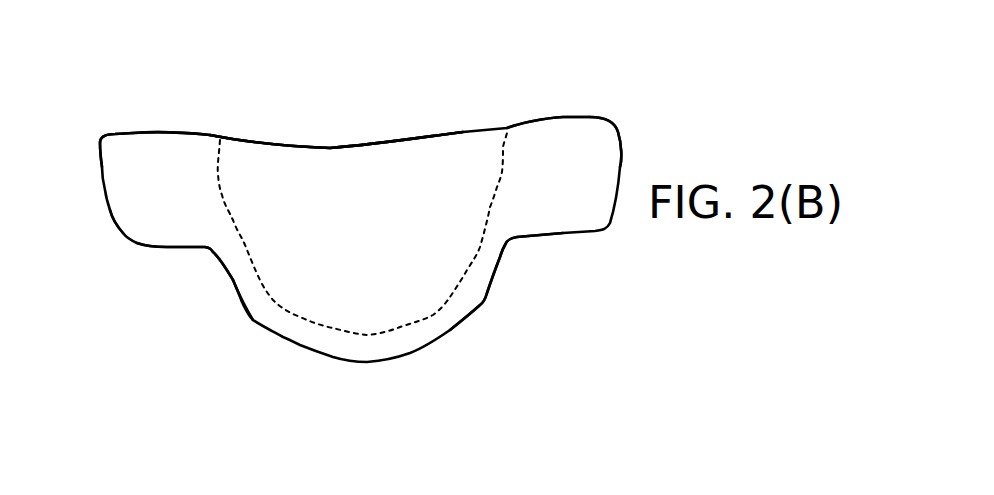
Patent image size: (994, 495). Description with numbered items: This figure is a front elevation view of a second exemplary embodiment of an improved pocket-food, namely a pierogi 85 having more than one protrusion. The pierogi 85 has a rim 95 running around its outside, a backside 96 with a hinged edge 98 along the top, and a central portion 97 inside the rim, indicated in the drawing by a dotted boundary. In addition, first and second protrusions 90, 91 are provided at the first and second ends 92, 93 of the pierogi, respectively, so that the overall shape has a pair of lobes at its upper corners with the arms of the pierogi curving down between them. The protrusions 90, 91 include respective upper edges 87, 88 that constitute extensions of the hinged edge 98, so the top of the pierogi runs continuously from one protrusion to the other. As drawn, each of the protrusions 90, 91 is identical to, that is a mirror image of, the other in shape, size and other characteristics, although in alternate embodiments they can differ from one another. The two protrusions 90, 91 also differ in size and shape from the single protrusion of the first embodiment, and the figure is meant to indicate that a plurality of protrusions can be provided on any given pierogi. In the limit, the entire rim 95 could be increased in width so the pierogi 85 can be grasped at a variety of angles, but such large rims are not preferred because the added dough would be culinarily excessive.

The pierogi 85 is at (498, 88).
The upper edge 87 is at (543, 118).
The upper edge 88 is at (172, 128).
The first protrusion 90 is at (592, 113).
The second protrusion 91 is at (137, 130).
The first end 92 is at (530, 293).
The second end 93 is at (190, 305).
The rim 95 is at (264, 287).
The backside 96 is at (348, 143).
The central portion 97 is at (375, 287).
The hinged edge 98 is at (336, 140).